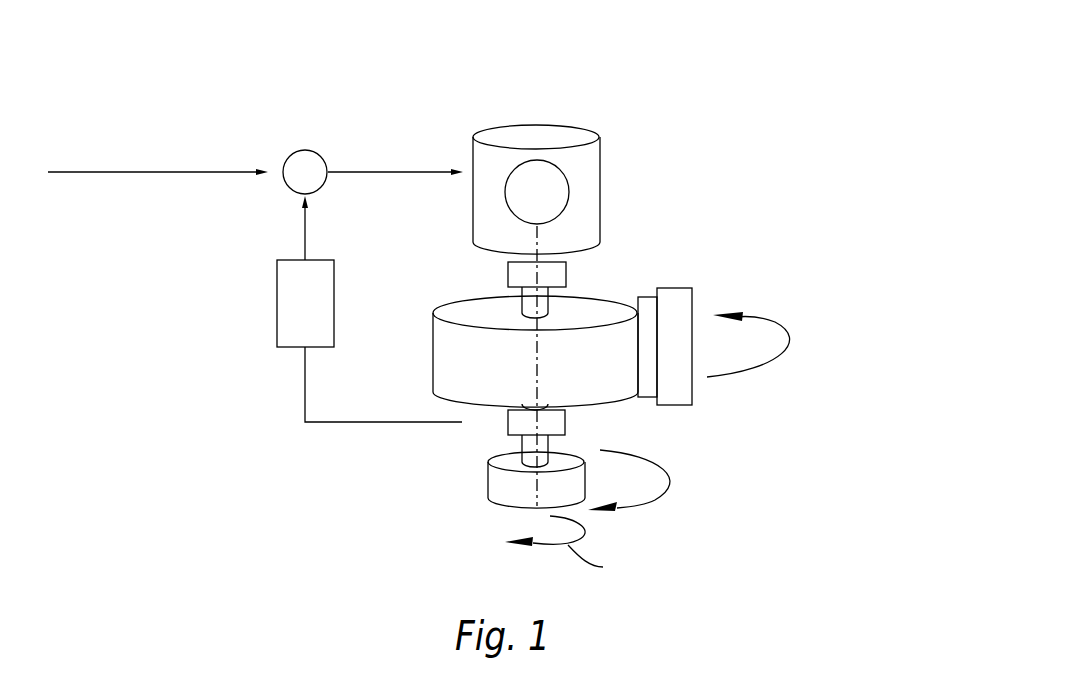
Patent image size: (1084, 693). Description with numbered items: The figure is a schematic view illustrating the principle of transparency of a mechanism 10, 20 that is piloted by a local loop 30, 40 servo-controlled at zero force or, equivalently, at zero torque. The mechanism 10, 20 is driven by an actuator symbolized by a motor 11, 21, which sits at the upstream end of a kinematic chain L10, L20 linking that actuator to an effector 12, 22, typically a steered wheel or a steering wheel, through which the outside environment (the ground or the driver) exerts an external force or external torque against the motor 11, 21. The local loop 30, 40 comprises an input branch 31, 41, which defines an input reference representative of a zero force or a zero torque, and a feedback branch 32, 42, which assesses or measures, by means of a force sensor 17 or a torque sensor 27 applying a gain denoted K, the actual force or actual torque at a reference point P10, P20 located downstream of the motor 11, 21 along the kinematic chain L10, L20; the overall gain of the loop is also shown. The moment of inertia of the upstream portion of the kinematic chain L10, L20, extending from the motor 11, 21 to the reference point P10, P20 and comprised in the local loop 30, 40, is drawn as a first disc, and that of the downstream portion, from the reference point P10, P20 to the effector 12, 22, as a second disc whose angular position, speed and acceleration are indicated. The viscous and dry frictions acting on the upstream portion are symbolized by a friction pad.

The mechanism 10 is at (629, 311).
The mechanism 20 is at (718, 88).
The motor 11 is at (536, 162).
The motor 21 is at (562, 134).
The effector 12 is at (476, 505).
The effector 22 is at (490, 485).
The force sensor 17 is at (593, 425).
The torque sensor 27 is at (552, 420).
The local loop 30 is at (253, 242).
The local loop 40 is at (218, 80).
The input branch 31 is at (156, 173).
The input branch 41 is at (62, 180).
The feedback branch 32 is at (234, 322).
The feedback branch 42 is at (252, 356).
The kinematic chain L10 is at (634, 364).
The kinematic chain L20 is at (540, 232).
The reference point P10 is at (424, 477).
The reference point P20 is at (497, 440).